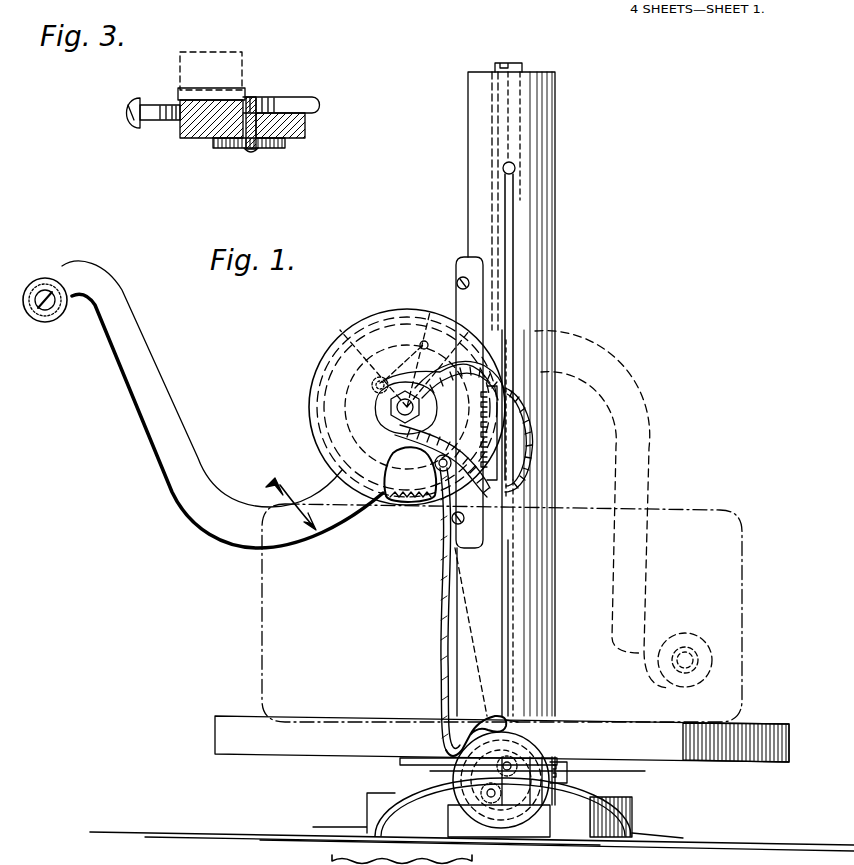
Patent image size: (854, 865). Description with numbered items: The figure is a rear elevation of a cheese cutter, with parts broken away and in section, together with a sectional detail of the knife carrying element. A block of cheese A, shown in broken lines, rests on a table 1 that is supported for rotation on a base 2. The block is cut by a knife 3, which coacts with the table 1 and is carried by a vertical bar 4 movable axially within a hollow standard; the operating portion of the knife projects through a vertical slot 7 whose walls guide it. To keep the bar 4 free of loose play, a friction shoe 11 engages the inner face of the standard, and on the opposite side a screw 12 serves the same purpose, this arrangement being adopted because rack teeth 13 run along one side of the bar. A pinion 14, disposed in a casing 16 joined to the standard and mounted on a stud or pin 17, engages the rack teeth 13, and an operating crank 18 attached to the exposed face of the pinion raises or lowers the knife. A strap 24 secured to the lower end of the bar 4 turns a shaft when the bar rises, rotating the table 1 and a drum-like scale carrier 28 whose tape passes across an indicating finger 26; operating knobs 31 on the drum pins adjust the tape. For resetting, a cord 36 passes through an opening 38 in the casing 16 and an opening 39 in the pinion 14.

In FIG. 1, the table 1 is at (700, 760).
In FIG. 1, the base 2 is at (634, 808).
In FIG. 1, the knife 3 is at (490, 327).
In FIG. 3, the vertical bar 4 is at (305, 128).
In FIG. 1, the vertical slot 7 is at (513, 270).
In FIG. 3, the friction shoe 11 is at (322, 105).
In FIG. 3, the screw 12 is at (134, 130).
In FIG. 3, the rack teeth 13 is at (243, 100).
In FIG. 3, the pinion 14 is at (245, 67).
In FIG. 1, the pinion 14 is at (408, 500).
In FIG. 1, the casing 16 is at (392, 490).
In FIG. 1, the stud or pin 17 is at (392, 406).
In FIG. 1, the operating crank 18 is at (180, 437).
In FIG. 3, the strap 24 is at (226, 148).
In FIG. 1, the indicating finger 26 is at (518, 722).
In FIG. 1, the scale carrier 28 is at (547, 762).
In FIG. 1, the operating knobs 31 is at (501, 796).
In FIG. 1, the cord 36 is at (440, 618).
In FIG. 1, the opening 38 is at (452, 468).
In FIG. 1, the opening 39 is at (424, 340).
In FIG. 1, the block of cheese A is at (676, 512).